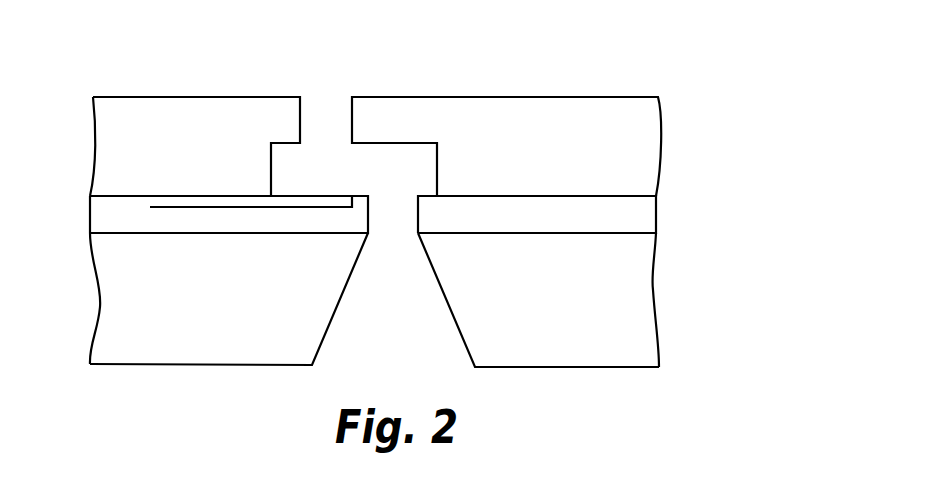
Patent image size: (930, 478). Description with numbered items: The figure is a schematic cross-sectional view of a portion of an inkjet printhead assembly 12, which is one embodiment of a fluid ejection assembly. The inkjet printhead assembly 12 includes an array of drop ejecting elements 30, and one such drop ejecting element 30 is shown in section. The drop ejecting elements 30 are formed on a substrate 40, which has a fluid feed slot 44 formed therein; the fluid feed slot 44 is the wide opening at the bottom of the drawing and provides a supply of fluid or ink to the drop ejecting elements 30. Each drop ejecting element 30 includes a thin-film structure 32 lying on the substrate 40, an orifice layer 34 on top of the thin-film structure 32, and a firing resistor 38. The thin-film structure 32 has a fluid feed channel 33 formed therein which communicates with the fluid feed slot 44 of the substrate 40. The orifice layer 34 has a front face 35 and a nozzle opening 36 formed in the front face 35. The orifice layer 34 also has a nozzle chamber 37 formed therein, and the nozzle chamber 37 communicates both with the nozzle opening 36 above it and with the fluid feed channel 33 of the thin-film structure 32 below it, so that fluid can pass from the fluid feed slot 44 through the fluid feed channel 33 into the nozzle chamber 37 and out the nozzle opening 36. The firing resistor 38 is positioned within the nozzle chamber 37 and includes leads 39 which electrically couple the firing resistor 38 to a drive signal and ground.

The inkjet printhead assembly 12 is at (760, 75).
The drop ejecting element 30 is at (550, 78).
The thin-film structure 32 is at (683, 200).
The fluid feed channel 33 is at (394, 222).
The orifice layer 34 is at (667, 98).
The front face 35 is at (228, 95).
The nozzle opening 36 is at (332, 104).
The nozzle chamber 37 is at (367, 183).
The firing resistor 38 is at (303, 205).
The leads 39 is at (199, 207).
The substrate 40 is at (667, 237).
The fluid feed slot 44 is at (375, 319).